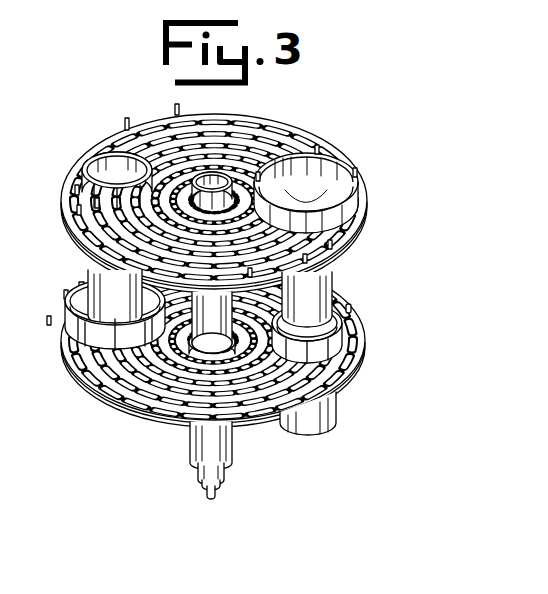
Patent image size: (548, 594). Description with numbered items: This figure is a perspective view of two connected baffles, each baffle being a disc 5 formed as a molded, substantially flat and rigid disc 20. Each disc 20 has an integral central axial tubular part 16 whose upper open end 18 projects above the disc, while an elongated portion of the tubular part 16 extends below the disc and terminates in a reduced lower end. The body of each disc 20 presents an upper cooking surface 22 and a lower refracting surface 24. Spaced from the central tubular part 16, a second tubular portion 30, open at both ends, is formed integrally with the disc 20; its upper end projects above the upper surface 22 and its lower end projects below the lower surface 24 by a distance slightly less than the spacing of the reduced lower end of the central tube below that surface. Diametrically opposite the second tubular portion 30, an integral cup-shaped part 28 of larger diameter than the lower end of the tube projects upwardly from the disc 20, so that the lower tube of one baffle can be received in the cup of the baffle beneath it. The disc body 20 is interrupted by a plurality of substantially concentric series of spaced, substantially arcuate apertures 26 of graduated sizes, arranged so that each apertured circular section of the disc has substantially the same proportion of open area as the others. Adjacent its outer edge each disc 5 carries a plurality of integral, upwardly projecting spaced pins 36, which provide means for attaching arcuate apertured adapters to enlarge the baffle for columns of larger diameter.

The disc 5 is at (216, 278).
The central axial tubular part 16 is at (217, 320).
The upper open end 18 is at (254, 107).
The disc 20 is at (154, 110).
The upper cooking surface 22 is at (100, 142).
The lower refracting surface 24 is at (152, 426).
The apertures 26 is at (222, 175).
The cup-shaped part 28 is at (352, 190).
The second tubular portion 30 is at (82, 170).
The pins 36 is at (127, 119).